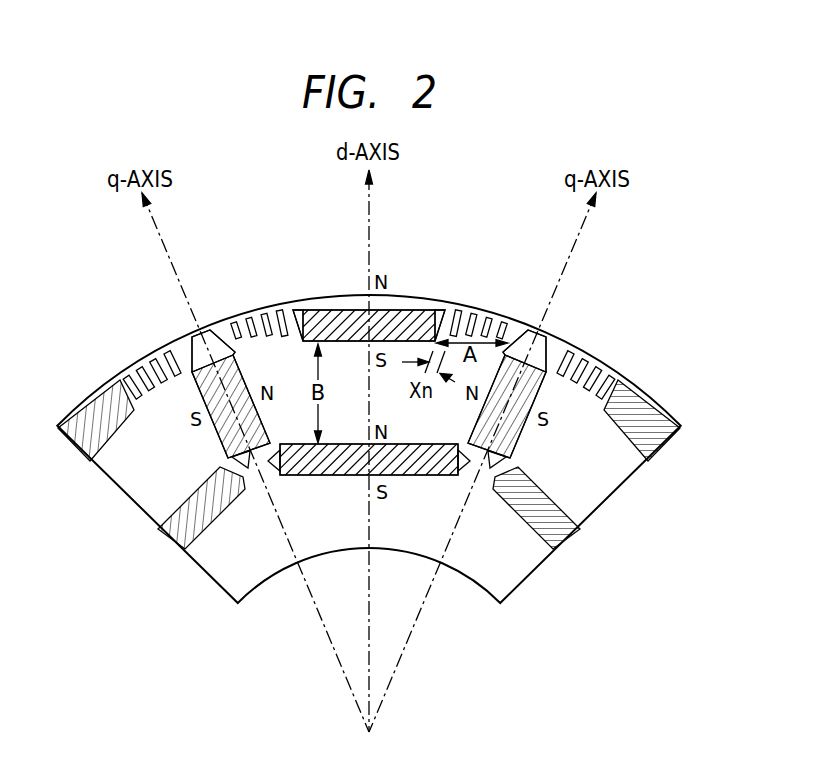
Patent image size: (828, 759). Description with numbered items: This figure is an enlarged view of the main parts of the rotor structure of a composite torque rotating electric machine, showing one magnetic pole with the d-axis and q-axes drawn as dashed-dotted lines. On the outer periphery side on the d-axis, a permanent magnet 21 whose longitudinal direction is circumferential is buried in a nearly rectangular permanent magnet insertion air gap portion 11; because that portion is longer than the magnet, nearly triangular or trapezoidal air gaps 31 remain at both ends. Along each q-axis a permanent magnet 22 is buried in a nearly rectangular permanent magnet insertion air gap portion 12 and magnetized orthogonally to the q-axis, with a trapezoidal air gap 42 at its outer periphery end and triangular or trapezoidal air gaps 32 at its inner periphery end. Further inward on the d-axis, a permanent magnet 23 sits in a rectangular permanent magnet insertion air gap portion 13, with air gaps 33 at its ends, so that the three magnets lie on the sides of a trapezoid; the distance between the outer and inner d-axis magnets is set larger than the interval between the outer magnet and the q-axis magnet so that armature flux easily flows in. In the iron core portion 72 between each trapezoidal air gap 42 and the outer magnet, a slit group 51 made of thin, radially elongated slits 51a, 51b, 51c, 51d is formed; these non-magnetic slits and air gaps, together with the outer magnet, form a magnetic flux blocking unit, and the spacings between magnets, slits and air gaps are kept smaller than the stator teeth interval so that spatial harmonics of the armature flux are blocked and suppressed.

The permanent magnet insertion air gap portion 11 is at (395, 297).
The permanent magnet insertion air gap portion 12 is at (192, 388).
The permanent magnet insertion air gap portion 13 is at (337, 477).
The permanent magnet 21 is at (353, 308).
The permanent magnet 22 is at (218, 426).
The permanent magnet 23 is at (400, 477).
The air gap 31 is at (300, 312).
The air gap 32 is at (226, 486).
The air gap 33 is at (272, 462).
The air gap having trapezoidal shape 42 is at (192, 350).
The slit group 51 is at (302, 227).
The slit 51a is at (284, 309).
The slit 51b is at (267, 313).
The slit 51c is at (252, 318).
The slit 51d is at (236, 322).
The iron core portion 72 is at (357, 323).